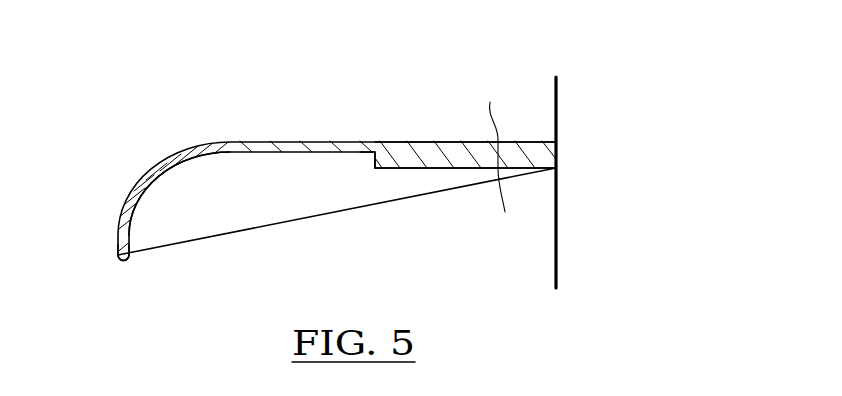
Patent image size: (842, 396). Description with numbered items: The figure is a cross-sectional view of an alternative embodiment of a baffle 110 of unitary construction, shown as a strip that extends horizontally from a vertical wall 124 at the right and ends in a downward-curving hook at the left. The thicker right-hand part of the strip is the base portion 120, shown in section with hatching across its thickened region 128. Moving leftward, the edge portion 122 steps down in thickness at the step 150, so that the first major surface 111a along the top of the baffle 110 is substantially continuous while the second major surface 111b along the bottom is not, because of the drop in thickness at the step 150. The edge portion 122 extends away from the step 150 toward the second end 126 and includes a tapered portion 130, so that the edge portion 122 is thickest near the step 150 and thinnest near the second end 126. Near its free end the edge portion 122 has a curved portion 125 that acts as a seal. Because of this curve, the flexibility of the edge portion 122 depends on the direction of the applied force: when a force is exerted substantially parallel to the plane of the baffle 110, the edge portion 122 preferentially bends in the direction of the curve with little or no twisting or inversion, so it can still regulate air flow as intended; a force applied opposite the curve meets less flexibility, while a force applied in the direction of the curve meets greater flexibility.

The baffle 110 is at (343, 125).
The base portion 120 is at (432, 141).
The tapered portion 130 is at (262, 143).
The edge portion 122 is at (151, 171).
The curved portion 125 is at (150, 194).
The second end 126 is at (123, 263).
The step 150 is at (375, 162).
The thickened portion of base 128 is at (443, 162).
The first major surface 111a is at (492, 122).
The second major surface 111b is at (507, 205).
The wall 124 is at (532, 155).